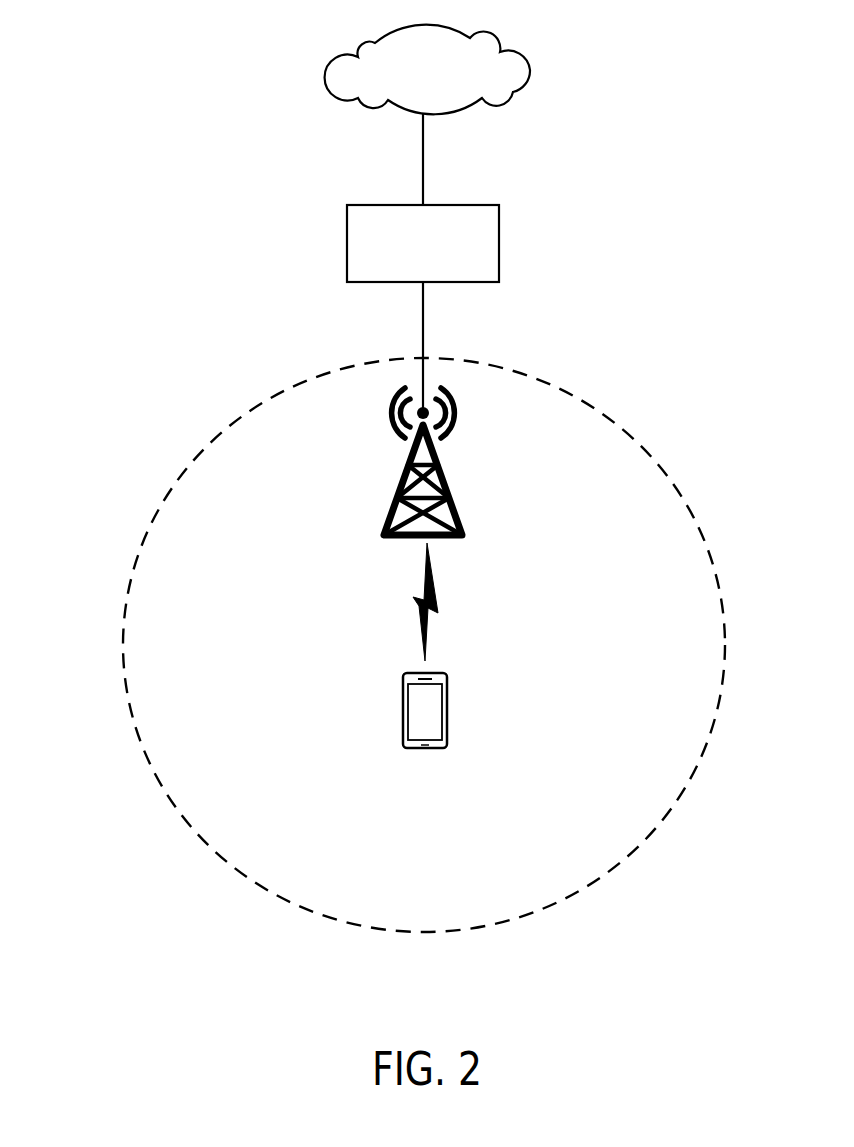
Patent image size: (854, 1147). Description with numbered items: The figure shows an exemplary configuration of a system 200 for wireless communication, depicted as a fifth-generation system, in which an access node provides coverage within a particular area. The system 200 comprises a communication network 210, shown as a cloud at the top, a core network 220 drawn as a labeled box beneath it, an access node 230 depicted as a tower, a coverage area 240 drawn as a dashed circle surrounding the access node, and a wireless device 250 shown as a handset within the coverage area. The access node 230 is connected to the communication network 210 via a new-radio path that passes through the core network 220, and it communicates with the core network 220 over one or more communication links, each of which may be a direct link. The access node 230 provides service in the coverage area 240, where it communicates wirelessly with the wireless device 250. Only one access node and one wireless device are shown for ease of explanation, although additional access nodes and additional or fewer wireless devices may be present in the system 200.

The system 200 is at (122, 65).
The communication network 210 is at (529, 70).
The 5G core 220 is at (347, 224).
The access node 230 is at (408, 466).
The coverage area 240 is at (175, 805).
The wireless device 250 is at (447, 723).